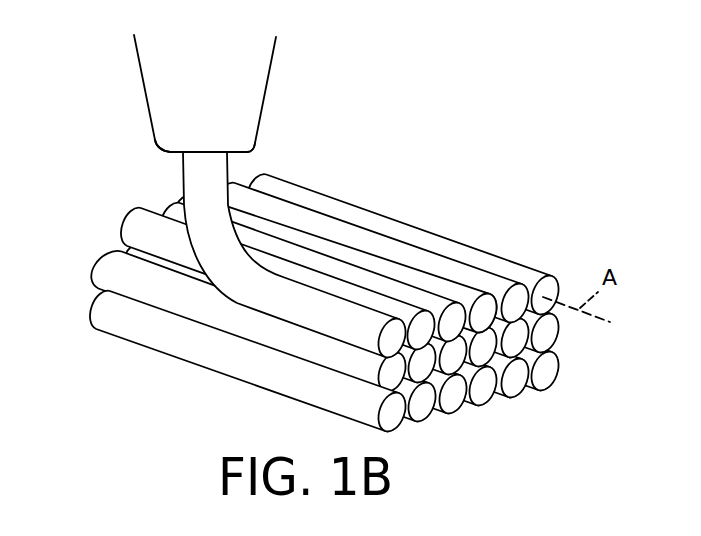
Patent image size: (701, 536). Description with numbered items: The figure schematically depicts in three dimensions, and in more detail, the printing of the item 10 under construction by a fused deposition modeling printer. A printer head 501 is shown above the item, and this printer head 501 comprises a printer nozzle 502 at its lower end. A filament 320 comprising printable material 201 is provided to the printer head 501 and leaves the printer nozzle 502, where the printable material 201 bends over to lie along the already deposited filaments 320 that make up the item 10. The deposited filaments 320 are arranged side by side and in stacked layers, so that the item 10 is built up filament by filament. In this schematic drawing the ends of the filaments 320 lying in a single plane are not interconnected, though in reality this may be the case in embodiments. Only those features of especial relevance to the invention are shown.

The 3D item 10 is at (435, 222).
The printable material 201 is at (202, 173).
The filament 320 is at (173, 337).
The printer head 501 is at (180, 61).
The printer nozzle 502 is at (174, 154).